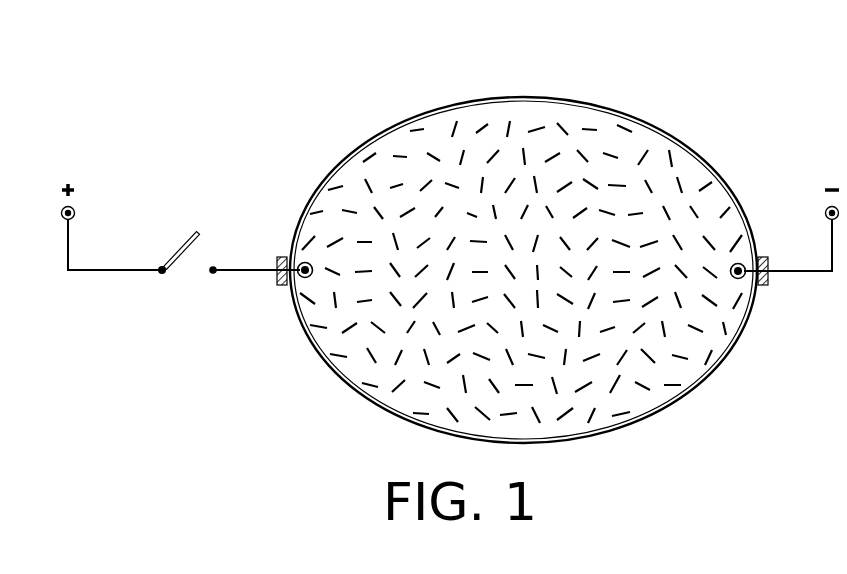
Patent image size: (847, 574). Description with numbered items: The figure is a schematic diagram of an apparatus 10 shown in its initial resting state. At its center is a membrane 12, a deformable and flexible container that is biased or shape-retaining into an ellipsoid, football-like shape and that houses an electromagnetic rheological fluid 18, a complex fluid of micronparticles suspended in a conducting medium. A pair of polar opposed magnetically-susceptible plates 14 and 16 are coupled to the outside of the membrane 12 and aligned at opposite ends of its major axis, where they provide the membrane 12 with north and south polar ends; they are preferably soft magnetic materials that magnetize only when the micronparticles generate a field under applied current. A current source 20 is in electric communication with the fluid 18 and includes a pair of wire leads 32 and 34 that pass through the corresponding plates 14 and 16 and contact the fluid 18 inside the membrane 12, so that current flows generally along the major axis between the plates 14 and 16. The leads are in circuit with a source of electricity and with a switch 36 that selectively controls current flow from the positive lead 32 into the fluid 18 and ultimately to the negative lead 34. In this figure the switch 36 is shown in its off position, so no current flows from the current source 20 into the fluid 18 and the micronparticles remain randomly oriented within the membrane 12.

The apparatus 10 is at (284, 90).
The membrane 12 is at (585, 105).
The magnetically-susceptible plate 14 is at (278, 287).
The magnetically-susceptible plate 16 is at (770, 287).
The electromagnetic rheological (EMR) fluid 18 is at (640, 186).
The current source 20 is at (100, 183).
The positive wire lead 32 is at (242, 272).
The negative wire lead 34 is at (800, 272).
The switch 36 is at (178, 248).